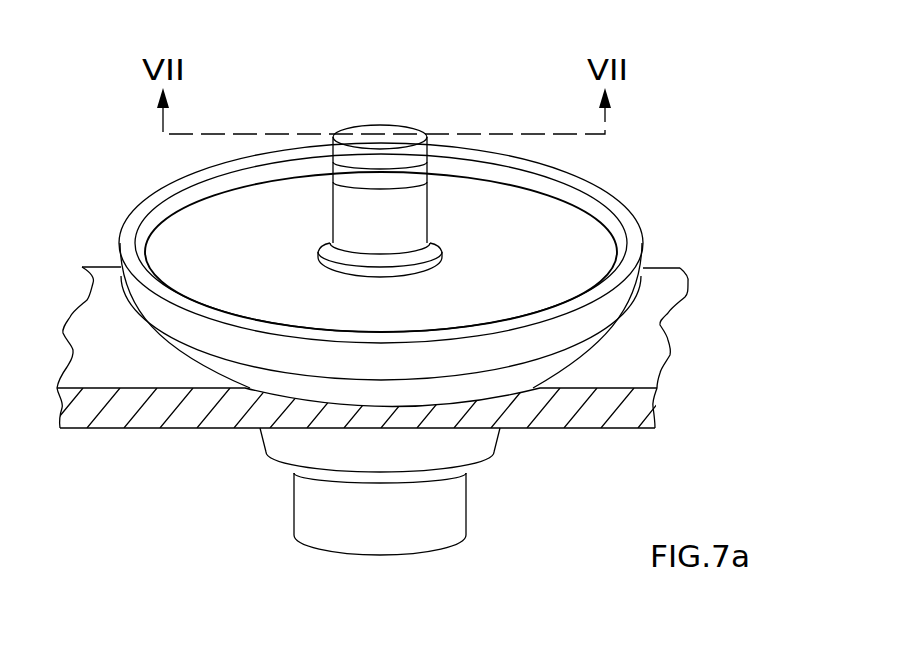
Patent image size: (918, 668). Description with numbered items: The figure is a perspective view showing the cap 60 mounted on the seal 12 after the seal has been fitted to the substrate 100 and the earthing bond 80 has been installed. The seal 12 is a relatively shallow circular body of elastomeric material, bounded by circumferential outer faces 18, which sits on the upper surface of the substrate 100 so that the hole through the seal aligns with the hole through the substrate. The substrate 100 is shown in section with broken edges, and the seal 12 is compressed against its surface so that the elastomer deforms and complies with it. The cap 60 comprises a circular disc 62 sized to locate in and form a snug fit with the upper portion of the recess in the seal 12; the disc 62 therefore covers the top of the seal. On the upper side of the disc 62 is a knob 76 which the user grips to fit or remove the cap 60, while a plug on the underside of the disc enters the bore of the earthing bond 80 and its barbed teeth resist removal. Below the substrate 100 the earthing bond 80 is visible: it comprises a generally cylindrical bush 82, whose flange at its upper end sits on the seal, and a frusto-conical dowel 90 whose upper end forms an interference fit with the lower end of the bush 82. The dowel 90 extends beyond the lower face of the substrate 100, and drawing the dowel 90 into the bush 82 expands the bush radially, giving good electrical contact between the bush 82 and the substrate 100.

The seal 12 is at (485, 157).
The circumferential outer faces 18 is at (625, 288).
The cap 60 is at (523, 230).
The circular disc 62 is at (218, 227).
The knob 76 is at (380, 133).
The earthing bond 80 is at (363, 522).
The bush 82 is at (463, 442).
The dowel 90 is at (445, 520).
The substrate 100 is at (615, 368).